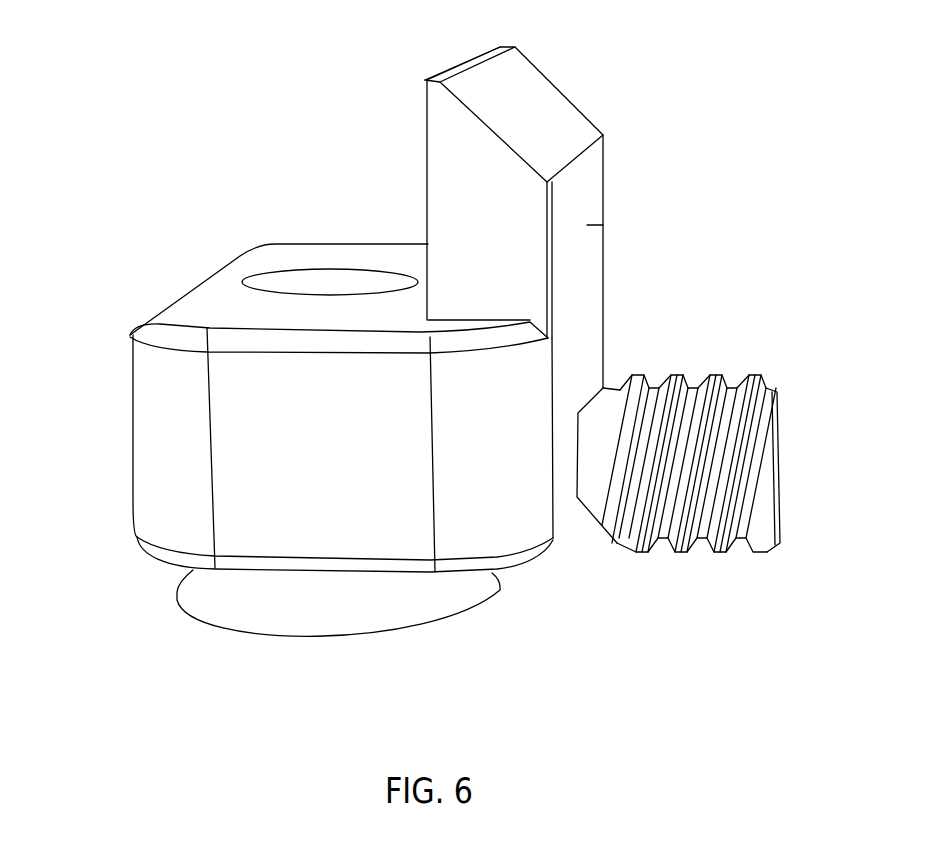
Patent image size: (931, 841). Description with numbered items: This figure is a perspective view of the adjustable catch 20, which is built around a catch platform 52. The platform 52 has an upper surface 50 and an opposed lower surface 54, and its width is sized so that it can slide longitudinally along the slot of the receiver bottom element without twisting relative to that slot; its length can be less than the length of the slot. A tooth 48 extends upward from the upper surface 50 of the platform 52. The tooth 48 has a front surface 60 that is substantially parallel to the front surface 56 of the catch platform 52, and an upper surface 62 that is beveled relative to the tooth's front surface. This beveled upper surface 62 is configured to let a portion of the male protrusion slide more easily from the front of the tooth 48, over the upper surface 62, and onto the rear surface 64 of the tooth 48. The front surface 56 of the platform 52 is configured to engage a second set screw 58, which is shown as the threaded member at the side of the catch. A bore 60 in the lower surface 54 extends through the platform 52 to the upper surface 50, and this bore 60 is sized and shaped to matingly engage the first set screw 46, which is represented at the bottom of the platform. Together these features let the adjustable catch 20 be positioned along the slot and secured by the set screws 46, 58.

The adjustable catch 20 is at (423, 383).
The first set screw 46 is at (378, 605).
The tooth 48 is at (474, 211).
The upper surface 50 is at (207, 302).
The catch platform 52 is at (410, 525).
The lower surface 54 is at (275, 572).
The front surface 56 is at (670, 487).
The second set screw 58 is at (757, 378).
The bore 60 is at (310, 284).
The upper surface of tooth 62 is at (543, 105).
The rear surface 64 is at (423, 100).